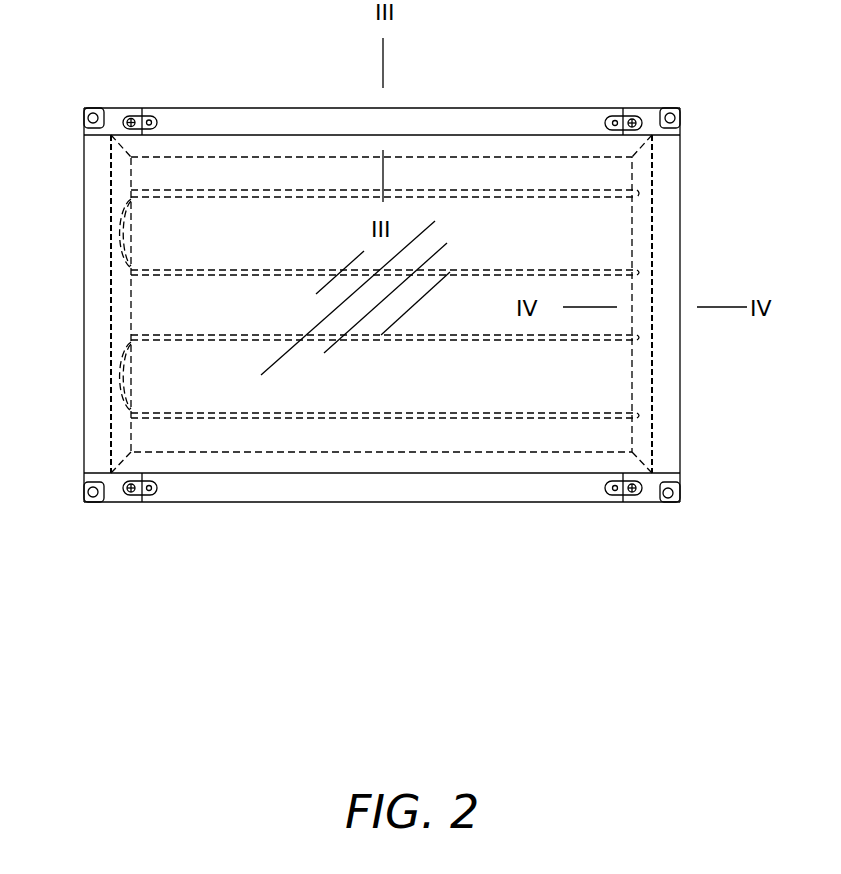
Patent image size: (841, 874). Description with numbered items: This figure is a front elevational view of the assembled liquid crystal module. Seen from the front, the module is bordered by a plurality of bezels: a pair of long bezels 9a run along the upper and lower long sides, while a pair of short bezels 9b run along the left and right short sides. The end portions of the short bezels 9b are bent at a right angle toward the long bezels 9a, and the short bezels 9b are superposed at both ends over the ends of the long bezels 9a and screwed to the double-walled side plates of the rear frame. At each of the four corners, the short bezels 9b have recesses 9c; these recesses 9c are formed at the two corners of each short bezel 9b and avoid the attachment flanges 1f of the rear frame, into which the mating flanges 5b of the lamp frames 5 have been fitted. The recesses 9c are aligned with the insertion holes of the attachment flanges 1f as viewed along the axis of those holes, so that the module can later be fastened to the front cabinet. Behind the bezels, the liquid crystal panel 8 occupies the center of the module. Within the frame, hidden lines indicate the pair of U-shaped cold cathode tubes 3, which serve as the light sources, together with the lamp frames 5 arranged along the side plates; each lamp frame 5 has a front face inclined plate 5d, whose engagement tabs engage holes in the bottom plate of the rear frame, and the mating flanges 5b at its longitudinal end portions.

The U-shaped cold cathode tube 3 is at (463, 190).
The lamp frame 5 is at (379, 304).
The front face inclined plate 5d is at (131, 312).
The mating flange 5b is at (423, 306).
The attachment flange 1f is at (672, 106).
The liquid crystal panel 8 is at (450, 438).
The long bezel 9a is at (246, 107).
The short bezel 9b is at (83, 236).
The recess 9c is at (680, 118).